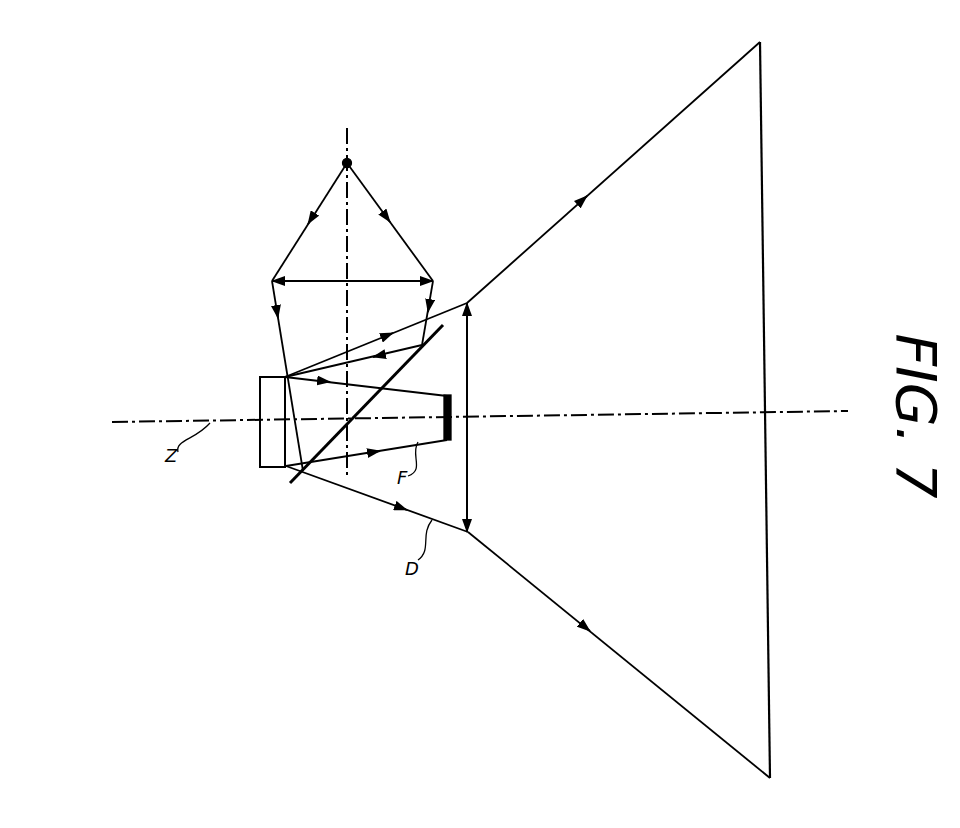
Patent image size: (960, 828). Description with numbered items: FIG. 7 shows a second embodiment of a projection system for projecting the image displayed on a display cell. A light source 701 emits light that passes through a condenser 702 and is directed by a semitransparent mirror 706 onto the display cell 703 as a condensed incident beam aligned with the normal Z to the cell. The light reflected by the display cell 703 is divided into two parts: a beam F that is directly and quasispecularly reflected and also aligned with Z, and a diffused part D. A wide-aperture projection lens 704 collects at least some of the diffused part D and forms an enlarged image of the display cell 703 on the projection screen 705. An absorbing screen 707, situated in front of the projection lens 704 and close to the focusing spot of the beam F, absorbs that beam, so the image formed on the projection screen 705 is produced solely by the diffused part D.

The light source 701 is at (350, 160).
The condenser 702 is at (375, 279).
The display cell 703 is at (282, 378).
The wide-aperture projection lens 704 is at (468, 472).
The projection screen 705 is at (766, 372).
The semitransparent mirror 706 is at (351, 418).
The absorbing screen 707 is at (450, 420).